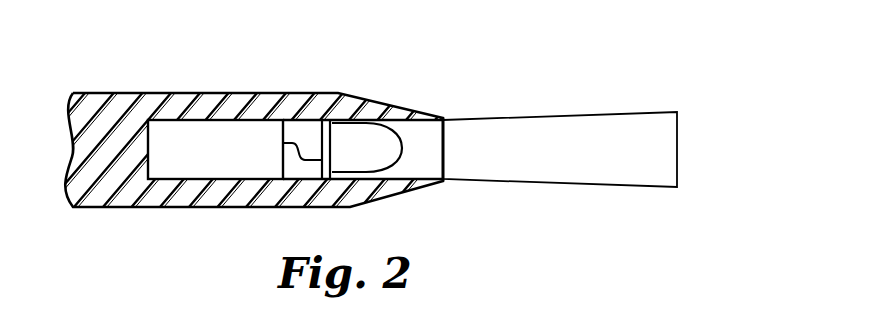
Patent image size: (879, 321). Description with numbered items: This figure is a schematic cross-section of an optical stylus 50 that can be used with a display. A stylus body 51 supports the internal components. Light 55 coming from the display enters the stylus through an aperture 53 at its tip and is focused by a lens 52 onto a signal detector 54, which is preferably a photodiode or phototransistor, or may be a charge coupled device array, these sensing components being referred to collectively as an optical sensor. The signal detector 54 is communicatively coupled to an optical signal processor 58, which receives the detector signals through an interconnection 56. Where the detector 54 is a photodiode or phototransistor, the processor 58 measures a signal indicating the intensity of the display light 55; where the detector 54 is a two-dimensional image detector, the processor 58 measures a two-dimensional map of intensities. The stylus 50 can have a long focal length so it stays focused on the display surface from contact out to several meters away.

The optical stylus 50 is at (474, 48).
The stylus body 51 is at (100, 100).
The lens 52 is at (370, 166).
The aperture 53 is at (443, 157).
The signal detector 54 is at (325, 173).
The light 55 is at (571, 129).
The interconnection 56 is at (297, 128).
The optical signal processor 58 is at (225, 130).